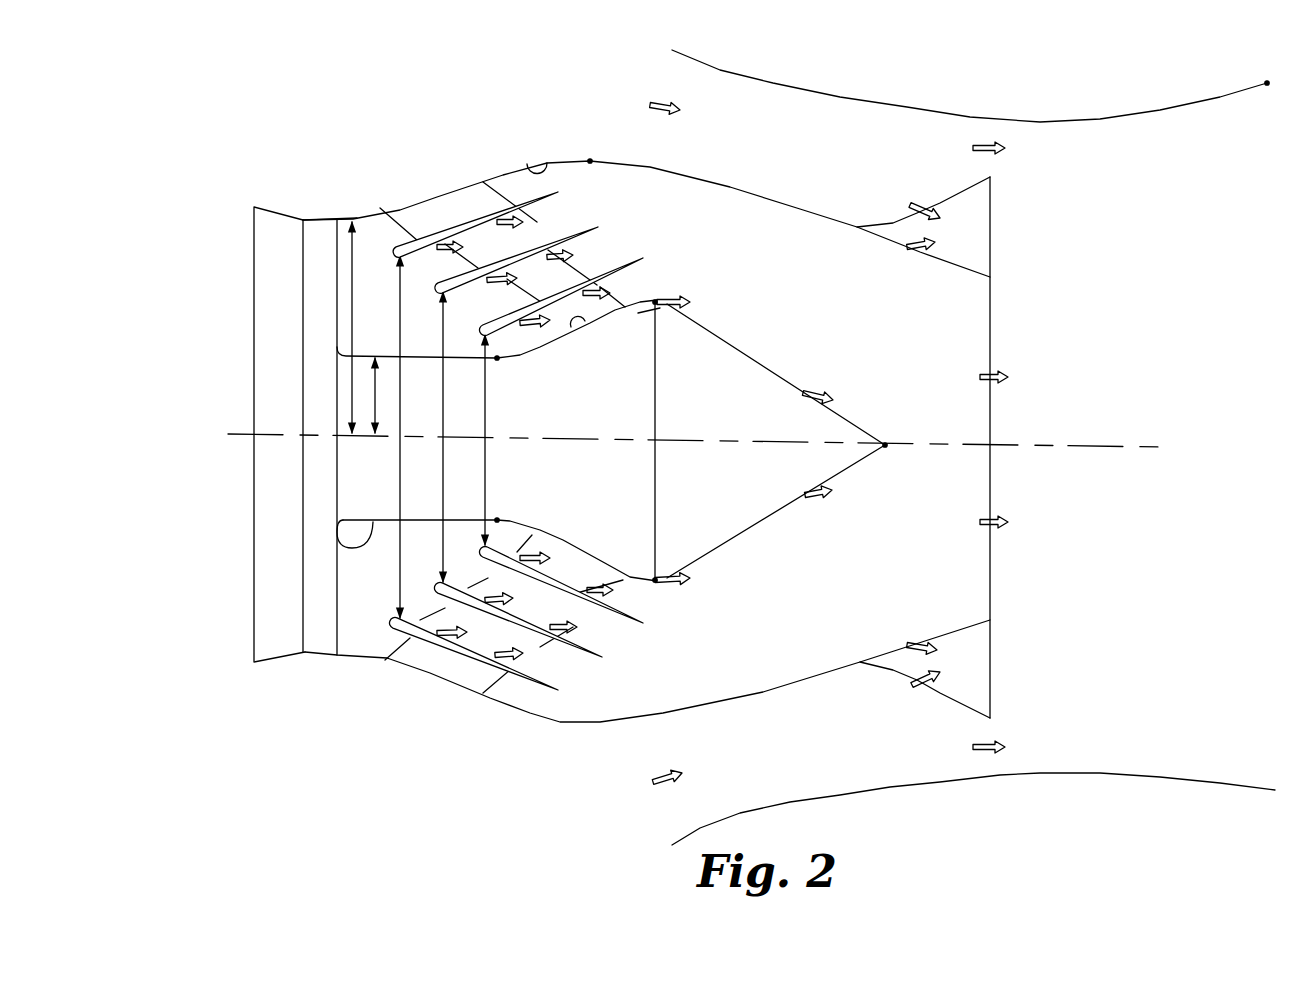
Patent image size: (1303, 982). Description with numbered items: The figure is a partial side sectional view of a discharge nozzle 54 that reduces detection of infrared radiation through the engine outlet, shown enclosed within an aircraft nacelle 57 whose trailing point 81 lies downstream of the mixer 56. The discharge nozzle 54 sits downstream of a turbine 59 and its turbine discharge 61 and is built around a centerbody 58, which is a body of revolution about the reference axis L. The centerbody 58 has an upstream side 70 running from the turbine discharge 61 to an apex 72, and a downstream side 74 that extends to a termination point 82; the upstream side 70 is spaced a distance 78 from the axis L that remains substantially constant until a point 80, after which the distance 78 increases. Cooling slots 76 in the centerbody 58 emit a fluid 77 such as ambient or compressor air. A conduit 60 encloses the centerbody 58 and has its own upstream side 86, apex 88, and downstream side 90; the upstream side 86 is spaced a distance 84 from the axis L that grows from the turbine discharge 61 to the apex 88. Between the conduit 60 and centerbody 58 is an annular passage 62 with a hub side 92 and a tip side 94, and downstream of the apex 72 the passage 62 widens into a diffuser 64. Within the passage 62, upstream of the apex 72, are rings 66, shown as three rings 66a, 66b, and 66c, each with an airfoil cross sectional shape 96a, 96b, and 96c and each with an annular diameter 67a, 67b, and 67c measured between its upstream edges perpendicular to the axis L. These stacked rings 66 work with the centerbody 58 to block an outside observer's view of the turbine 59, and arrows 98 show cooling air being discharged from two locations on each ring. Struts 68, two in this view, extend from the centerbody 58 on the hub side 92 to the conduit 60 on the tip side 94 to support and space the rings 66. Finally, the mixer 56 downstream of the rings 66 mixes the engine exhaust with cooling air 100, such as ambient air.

The discharge nozzle 54 is at (383, 85).
The cooling air 100 is at (662, 100).
The aircraft nacelle 57 is at (910, 107).
The trailing point 81 is at (1268, 85).
The tip side 94 is at (538, 165).
The apex 88 is at (590, 160).
The conduit 60 is at (728, 187).
The downstream side 90 is at (763, 193).
The turbine 59 is at (275, 252).
The turbine discharge 61 is at (318, 347).
The centerbody 58 is at (357, 485).
The upstream side 86 is at (357, 216).
The upstream side 70 is at (340, 548).
The point 80 is at (497, 358).
The hub side 92 is at (578, 330).
The apex 72 is at (655, 300).
The fluid 77 is at (663, 307).
The downstream side 74 is at (770, 373).
The cooling slots 76 is at (716, 317).
The termination point 82 is at (890, 445).
The reference axis L is at (1120, 447).
The distance 84 is at (353, 290).
The distance 78 is at (377, 398).
The annular diameter 67a is at (400, 452).
The annular diameter 67b is at (445, 500).
The annular diameter 67c is at (492, 424).
The struts 68 is at (405, 218).
The airfoil cross sectional shape 96a is at (430, 233).
The airfoil cross sectional shape 96b is at (452, 273).
The airfoil cross sectional shape 96c is at (505, 320).
The ring 66a is at (627, 602).
The ring 66b is at (587, 627).
The ring 66c is at (530, 668).
The arrows 98 is at (517, 233).
The passage 62 is at (703, 234).
The diffuser 64 is at (818, 304).
The rings 66 is at (363, 575).
The mixer 56 is at (958, 715).